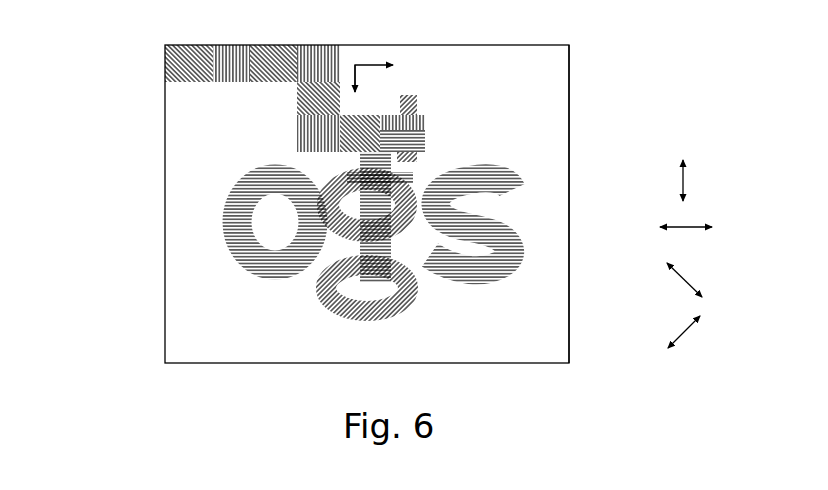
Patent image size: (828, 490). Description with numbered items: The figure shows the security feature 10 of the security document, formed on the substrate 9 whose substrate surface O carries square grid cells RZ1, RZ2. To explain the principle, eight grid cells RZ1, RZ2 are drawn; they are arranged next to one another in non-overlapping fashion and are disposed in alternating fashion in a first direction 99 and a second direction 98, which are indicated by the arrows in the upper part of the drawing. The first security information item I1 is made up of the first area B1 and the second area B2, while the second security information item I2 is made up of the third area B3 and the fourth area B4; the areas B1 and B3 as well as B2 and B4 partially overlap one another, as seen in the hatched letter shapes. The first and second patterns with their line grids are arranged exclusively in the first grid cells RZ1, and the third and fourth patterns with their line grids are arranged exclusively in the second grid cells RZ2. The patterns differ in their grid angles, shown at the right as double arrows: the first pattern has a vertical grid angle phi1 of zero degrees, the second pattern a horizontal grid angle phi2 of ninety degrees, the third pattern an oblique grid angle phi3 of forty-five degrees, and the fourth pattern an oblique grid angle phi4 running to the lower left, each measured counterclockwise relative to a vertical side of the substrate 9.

The substrate 9 is at (420, 197).
The substrate surface O is at (538, 101).
The security feature 10 is at (569, 152).
The first grid cell RZ1 is at (224, 54).
The second grid cell RZ2 is at (287, 65).
The first area B1 is at (110, 96).
The third area B3 is at (212, 131).
The second area B2 is at (243, 190).
The fourth area B4 is at (333, 303).
The first security information item I1 is at (90, 253).
The second security information item I2 is at (140, 238).
The second direction 98 is at (373, 85).
The first direction 99 is at (394, 73).
The grid angle of the first pattern phi1 is at (726, 180).
The grid angle of the second pattern phi2 is at (716, 227).
The grid angle of the third pattern phi3 is at (719, 279).
The grid angle of the fourth pattern phi4 is at (721, 332).